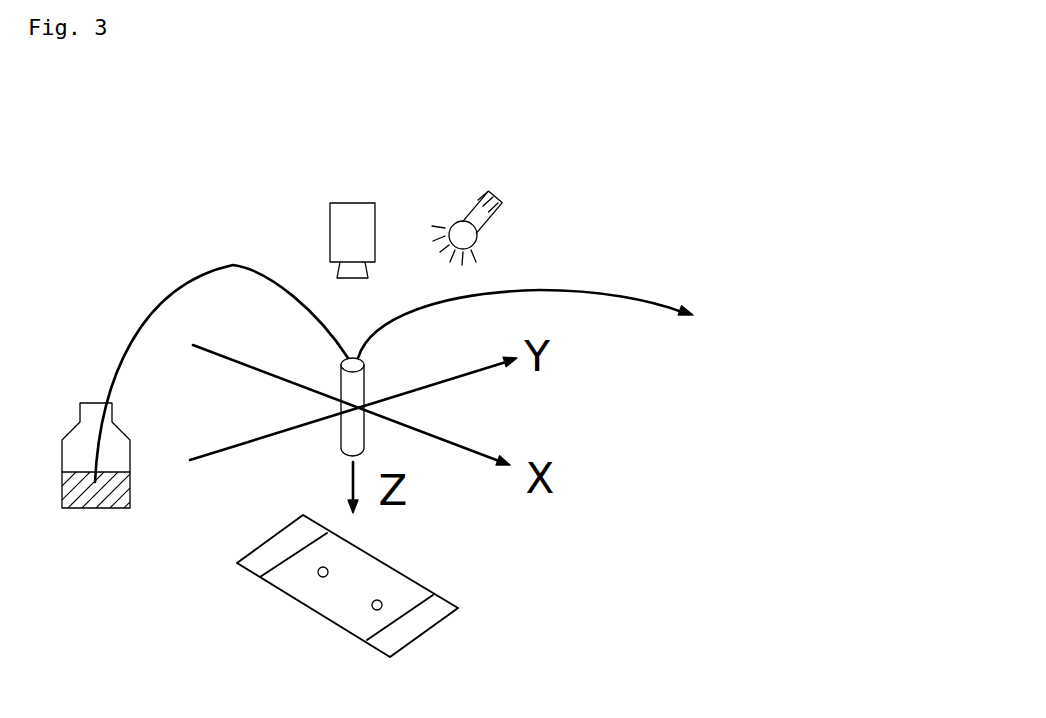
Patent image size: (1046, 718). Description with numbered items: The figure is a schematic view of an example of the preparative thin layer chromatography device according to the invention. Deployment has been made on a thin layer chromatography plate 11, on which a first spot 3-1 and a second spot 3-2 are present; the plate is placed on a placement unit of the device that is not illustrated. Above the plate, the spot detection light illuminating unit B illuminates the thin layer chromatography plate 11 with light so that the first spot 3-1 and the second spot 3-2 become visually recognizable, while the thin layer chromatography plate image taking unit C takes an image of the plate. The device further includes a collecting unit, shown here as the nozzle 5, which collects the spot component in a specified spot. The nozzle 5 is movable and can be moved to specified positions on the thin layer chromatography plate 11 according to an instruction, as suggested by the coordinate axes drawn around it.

The nozzle 5 is at (365, 391).
The thin layer chromatography plate 11 is at (460, 608).
The first spot 3-1 is at (317, 571).
The second spot 3-2 is at (383, 607).
The spot detection light illuminating unit B is at (497, 197).
The thin layer chromatography plate image taking unit C is at (330, 208).